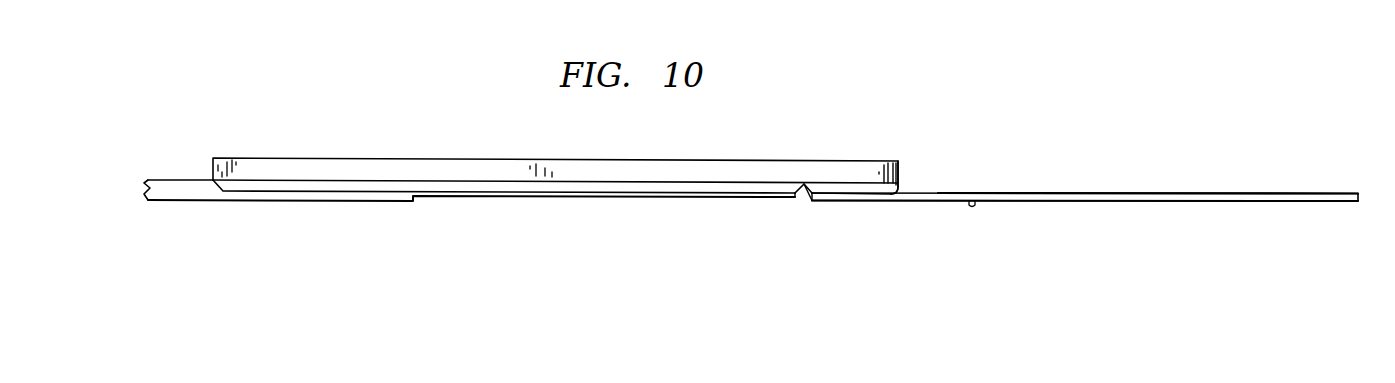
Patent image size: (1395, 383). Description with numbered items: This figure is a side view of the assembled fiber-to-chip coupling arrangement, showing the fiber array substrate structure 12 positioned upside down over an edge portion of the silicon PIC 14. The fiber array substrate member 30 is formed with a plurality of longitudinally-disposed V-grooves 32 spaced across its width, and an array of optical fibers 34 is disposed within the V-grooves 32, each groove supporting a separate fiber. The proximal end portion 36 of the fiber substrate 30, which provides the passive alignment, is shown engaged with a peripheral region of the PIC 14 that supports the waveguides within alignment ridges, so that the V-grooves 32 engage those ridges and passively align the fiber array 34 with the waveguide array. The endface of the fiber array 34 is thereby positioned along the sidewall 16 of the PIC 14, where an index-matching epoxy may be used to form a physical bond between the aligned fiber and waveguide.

The fiber array substrate structure 12 is at (256, 118).
The PIC 14 is at (1206, 198).
The sidewall 16 is at (806, 200).
The fiber array substrate member 30 is at (387, 158).
The V-grooves 32 is at (604, 195).
The optical fibers 34 is at (799, 198).
The proximal end portion 36 is at (898, 154).